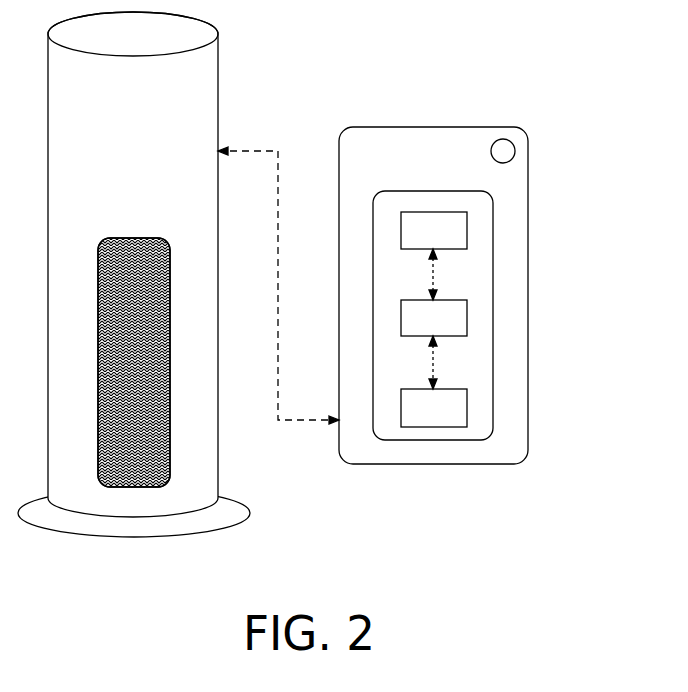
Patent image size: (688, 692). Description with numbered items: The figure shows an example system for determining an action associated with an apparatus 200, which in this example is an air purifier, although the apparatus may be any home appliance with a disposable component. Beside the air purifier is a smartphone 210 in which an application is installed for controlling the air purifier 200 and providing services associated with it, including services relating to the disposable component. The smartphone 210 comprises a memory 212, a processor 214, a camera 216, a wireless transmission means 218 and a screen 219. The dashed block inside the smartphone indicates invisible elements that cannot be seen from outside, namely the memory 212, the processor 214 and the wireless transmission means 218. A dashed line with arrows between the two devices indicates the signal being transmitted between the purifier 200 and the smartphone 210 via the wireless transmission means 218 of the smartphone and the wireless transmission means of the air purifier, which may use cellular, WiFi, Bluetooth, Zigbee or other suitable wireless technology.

The apparatus 200 is at (155, 94).
The smartphone 210 is at (454, 164).
The memory 212 is at (454, 240).
The processor 214 is at (454, 328).
The camera 216 is at (515, 151).
The wireless transmission means 218 is at (454, 418).
The screen 219 is at (493, 275).